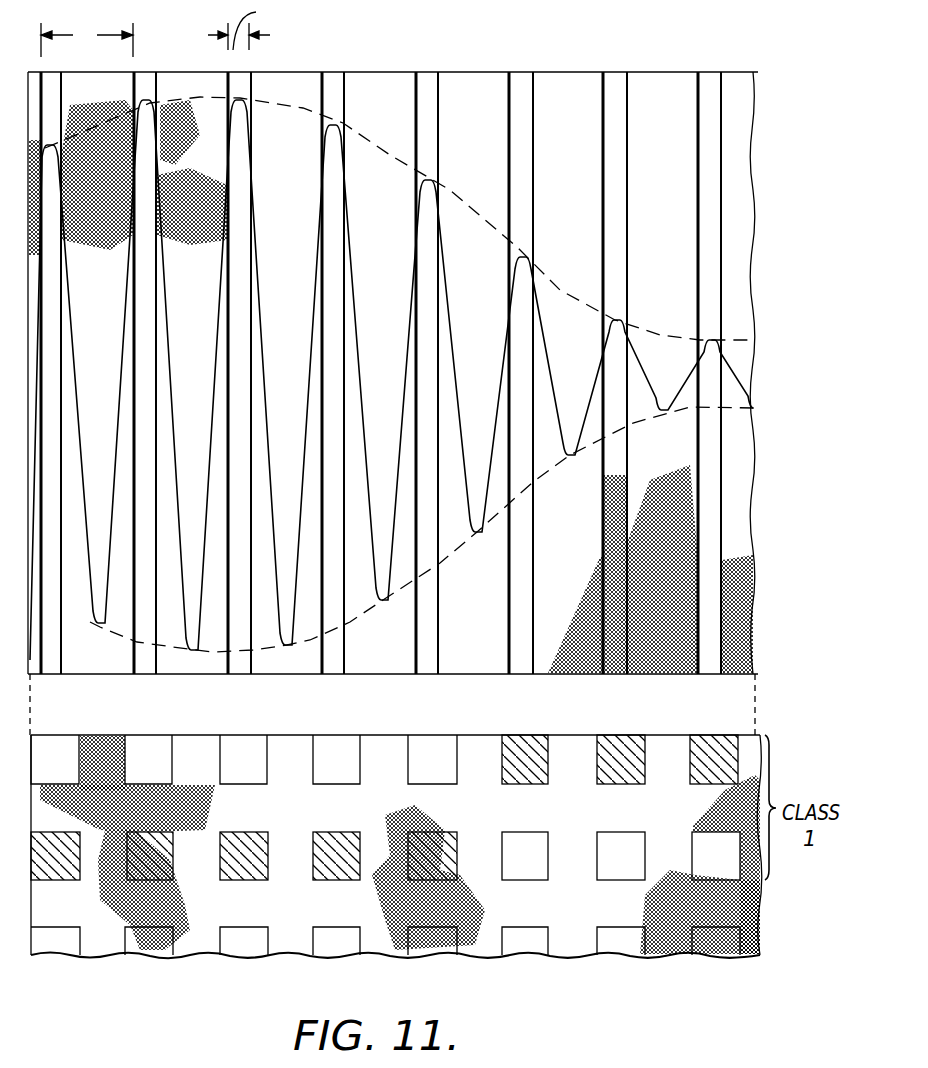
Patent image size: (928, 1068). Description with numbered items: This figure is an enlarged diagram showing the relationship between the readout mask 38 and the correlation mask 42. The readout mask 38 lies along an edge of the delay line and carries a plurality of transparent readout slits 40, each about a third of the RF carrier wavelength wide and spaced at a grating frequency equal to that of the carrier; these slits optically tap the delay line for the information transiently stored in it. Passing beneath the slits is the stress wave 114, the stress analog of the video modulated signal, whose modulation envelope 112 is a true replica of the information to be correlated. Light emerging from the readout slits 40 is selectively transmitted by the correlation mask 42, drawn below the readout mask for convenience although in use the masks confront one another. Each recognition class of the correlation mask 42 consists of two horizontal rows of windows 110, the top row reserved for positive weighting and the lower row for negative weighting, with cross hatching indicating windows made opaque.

The readout mask 38 is at (586, 73).
The readout slits 40 is at (425, 72).
The correlation mask 42 is at (105, 748).
The windows 110 is at (335, 755).
The modulation envelope 112 is at (450, 190).
The stress wave 114 is at (452, 330).